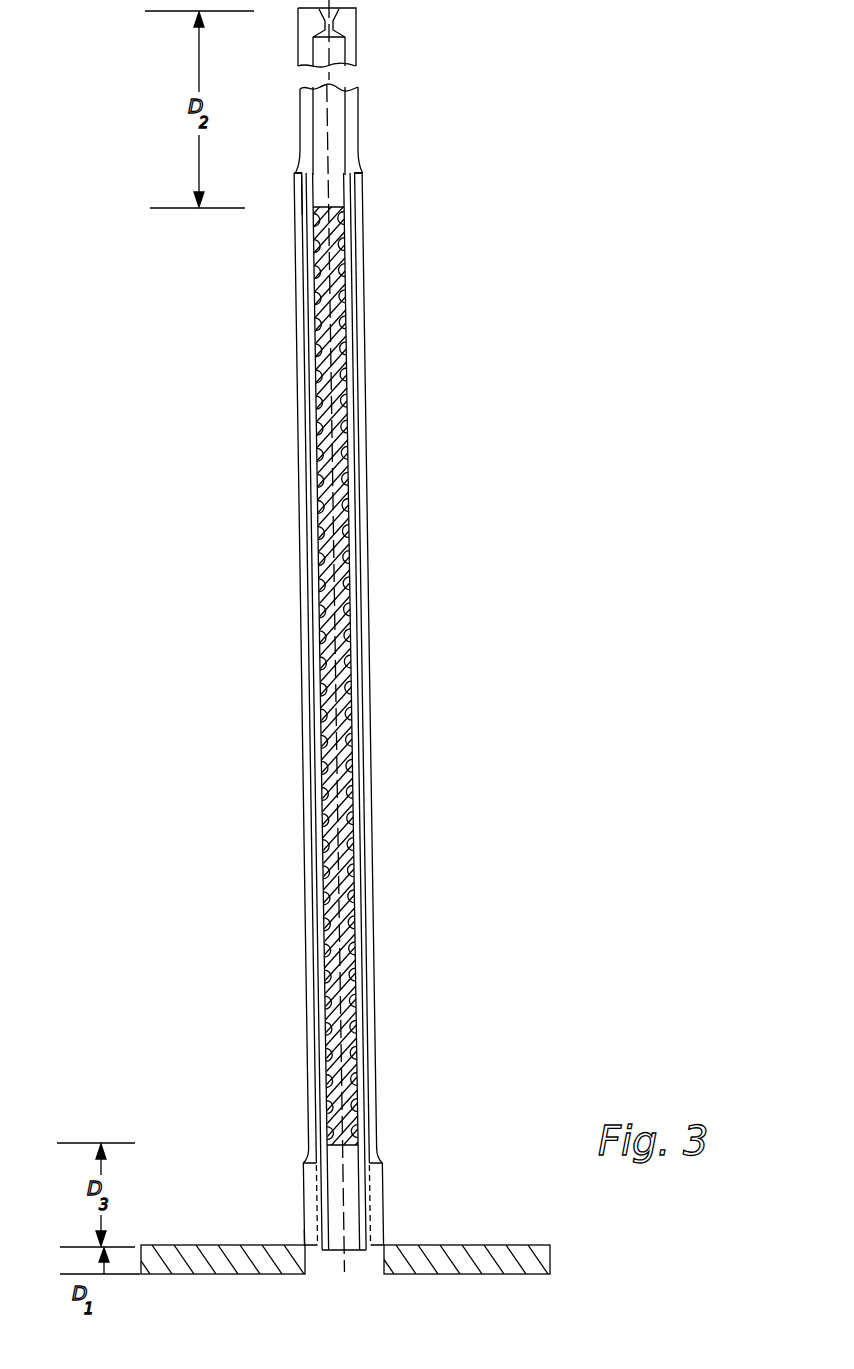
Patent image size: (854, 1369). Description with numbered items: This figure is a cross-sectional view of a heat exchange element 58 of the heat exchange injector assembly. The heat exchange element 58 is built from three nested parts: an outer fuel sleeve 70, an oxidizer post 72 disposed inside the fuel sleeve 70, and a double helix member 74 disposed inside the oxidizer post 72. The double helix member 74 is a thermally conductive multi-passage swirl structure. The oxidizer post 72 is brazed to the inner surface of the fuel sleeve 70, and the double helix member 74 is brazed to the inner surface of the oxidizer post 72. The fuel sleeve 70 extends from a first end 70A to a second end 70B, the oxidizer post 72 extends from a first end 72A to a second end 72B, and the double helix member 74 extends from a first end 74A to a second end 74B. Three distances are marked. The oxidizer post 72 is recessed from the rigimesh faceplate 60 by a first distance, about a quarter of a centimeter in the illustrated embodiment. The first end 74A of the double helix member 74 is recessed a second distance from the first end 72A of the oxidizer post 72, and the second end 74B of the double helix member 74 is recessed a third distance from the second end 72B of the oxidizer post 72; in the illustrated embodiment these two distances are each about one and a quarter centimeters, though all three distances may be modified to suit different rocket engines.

The heat exchange element 58 is at (404, 68).
The rigimesh faceplate 60 is at (475, 1262).
The fuel sleeve 70 is at (376, 326).
The first end of fuel sleeve 70A is at (302, 210).
The second end of fuel sleeve 70B is at (383, 1246).
The oxidizer post 72 is at (355, 129).
The first end of oxidizer post 72A is at (332, 22).
The second end of oxidizer post 72B is at (351, 1250).
The double helix member 74 is at (352, 232).
The first end of double helix member 74A is at (346, 214).
The second end of double helix member 74B is at (366, 1161).